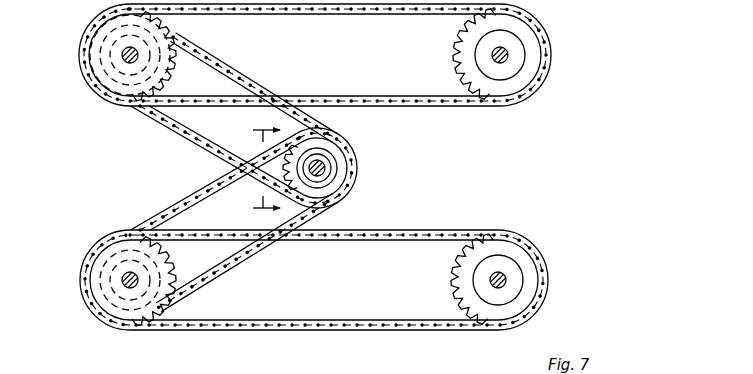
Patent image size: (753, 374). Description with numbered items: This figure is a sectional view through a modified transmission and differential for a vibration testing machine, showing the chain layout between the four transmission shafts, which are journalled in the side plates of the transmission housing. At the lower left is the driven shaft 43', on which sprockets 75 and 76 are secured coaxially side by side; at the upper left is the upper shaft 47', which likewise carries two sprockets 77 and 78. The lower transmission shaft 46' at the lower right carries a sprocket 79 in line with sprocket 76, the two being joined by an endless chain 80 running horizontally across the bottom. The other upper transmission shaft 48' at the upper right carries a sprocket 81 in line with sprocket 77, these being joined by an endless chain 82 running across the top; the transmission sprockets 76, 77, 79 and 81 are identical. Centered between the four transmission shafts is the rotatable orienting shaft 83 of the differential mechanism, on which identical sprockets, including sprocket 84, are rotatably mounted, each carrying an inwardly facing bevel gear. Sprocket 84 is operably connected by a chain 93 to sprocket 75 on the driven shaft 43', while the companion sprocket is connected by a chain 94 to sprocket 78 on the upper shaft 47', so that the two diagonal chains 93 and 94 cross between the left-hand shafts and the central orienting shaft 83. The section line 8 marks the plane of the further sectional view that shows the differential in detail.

The section line 8- 8 is at (258, 170).
The driven shaft 43' is at (86, 289).
The lower transmission shaft 46' is at (533, 280).
The upper shaft 47' is at (90, 69).
The upper transmission shaft 48' is at (529, 60).
The sprocket 75 is at (160, 262).
The sprocket 76 is at (160, 308).
The sprocket 77 is at (178, 79).
The sprocket 78 is at (93, 54).
The sprocket 79 is at (450, 273).
The endless chain 80 is at (392, 229).
The sprocket 81 is at (454, 50).
The endless chain 82 is at (436, 107).
The orienting shaft 83 is at (322, 168).
The sprocket 84 is at (325, 193).
The chain 93 is at (240, 258).
The chain 94 is at (210, 147).